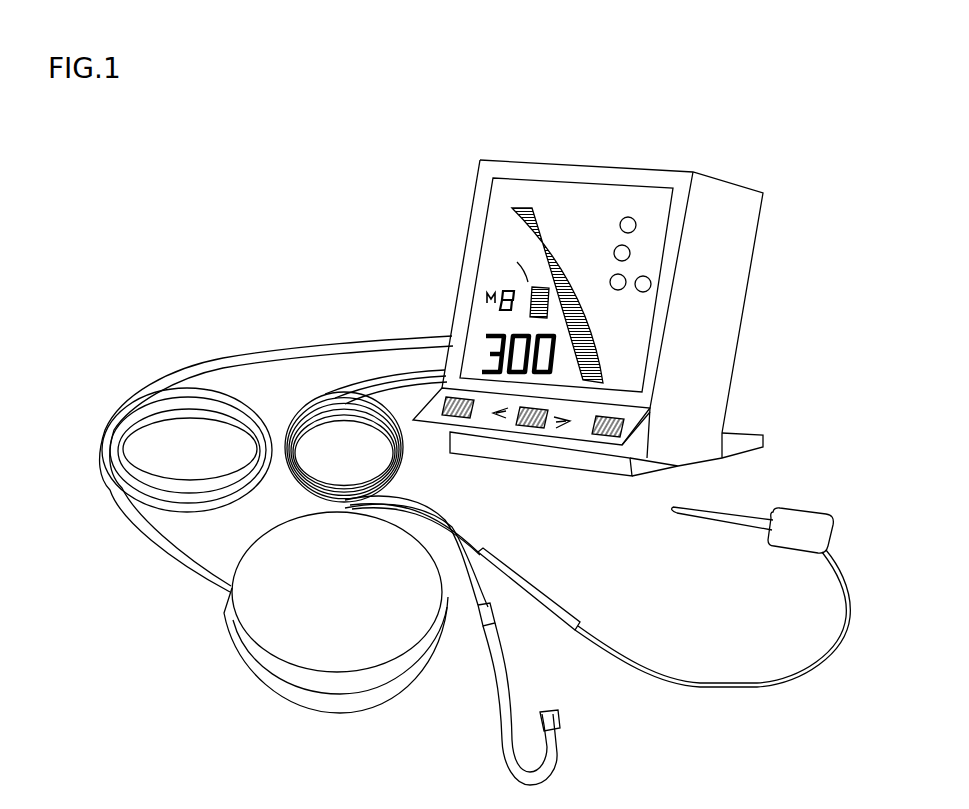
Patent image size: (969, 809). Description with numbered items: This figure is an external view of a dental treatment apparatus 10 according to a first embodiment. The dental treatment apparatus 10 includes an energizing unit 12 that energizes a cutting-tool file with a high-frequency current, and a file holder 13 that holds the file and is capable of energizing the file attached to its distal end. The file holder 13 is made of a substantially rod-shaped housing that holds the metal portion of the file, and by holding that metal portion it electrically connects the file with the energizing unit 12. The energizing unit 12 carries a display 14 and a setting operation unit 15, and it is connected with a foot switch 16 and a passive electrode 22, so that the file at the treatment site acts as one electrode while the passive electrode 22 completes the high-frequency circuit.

The dental treatment apparatus 10 is at (725, 154).
The energizing unit 12 is at (737, 255).
The file holder 13 is at (740, 517).
The display 14 is at (570, 200).
The setting operation unit 15 is at (490, 412).
The foot switch 16 is at (260, 560).
The passive electrode 22 is at (502, 755).